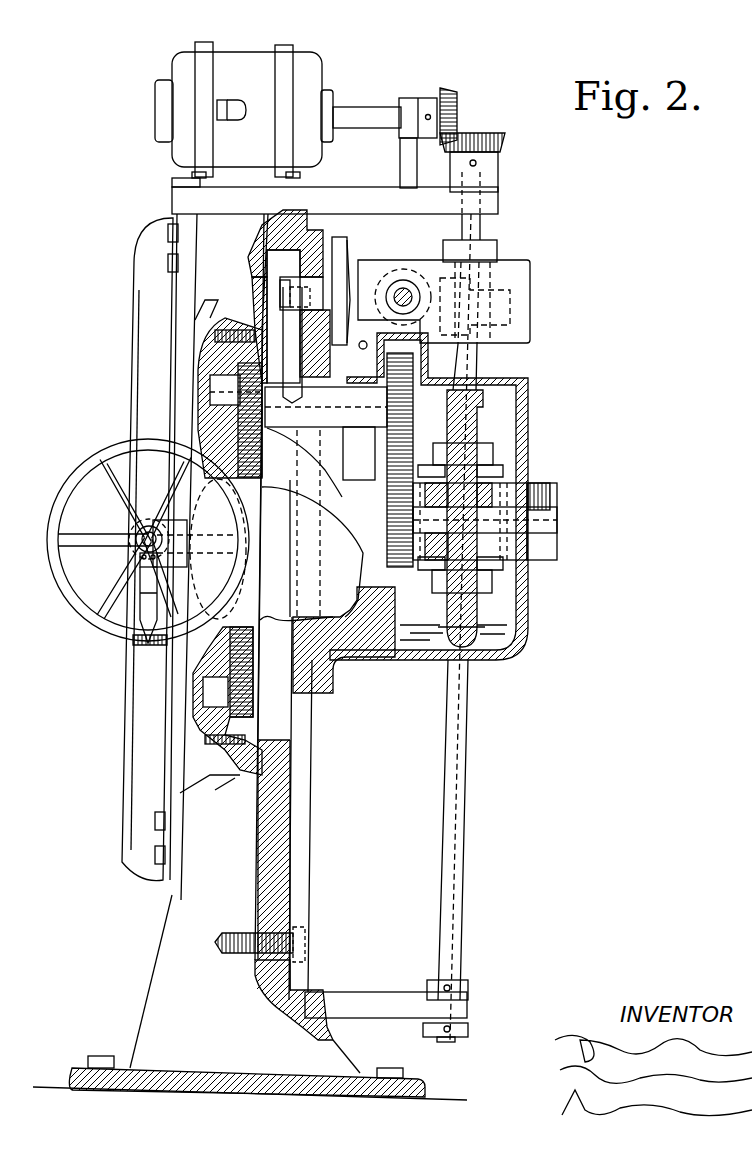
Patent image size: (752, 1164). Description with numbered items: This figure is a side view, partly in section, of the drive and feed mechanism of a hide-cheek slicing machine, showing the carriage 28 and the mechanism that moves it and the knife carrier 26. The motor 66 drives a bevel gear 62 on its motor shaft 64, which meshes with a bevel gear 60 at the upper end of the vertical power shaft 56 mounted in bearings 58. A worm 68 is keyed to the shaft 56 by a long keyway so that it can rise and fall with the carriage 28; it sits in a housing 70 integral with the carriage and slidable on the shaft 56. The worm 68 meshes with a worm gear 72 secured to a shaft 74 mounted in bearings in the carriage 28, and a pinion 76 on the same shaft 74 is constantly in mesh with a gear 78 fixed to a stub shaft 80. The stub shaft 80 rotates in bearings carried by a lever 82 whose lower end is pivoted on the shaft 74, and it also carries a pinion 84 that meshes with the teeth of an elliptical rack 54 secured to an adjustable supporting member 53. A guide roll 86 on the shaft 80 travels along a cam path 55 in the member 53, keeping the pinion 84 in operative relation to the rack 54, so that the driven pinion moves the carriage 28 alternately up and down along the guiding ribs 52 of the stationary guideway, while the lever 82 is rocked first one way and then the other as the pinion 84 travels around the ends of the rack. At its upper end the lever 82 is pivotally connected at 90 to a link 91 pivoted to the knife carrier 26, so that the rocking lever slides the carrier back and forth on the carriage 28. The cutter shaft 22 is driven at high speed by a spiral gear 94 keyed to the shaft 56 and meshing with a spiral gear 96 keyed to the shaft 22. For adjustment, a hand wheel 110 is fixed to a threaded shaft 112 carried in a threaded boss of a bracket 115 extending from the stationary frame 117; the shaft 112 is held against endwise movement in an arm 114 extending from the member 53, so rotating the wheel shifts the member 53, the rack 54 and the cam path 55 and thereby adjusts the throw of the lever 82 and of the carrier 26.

The shaft 22 is at (404, 286).
The knife carrier 26 is at (342, 255).
The carriage 28 is at (332, 672).
The guiding ribs 52 is at (302, 768).
The adjustable supporting member 53 is at (210, 778).
The elliptical rack 54 is at (215, 352).
The cam path 55 is at (215, 385).
The shaft 56 is at (480, 230).
The bearings 58 is at (490, 196).
The bevel gear 60 is at (502, 140).
The bevel gear 62 is at (452, 93).
The motor shaft 64 is at (352, 112).
The motor 66 is at (245, 78).
The worm 68 is at (505, 470).
The housing 70 is at (522, 586).
The worm gear 72 is at (490, 628).
The shaft 74 is at (558, 527).
The pinion 76 is at (398, 558).
The gear 78 is at (404, 440).
The stub shaft 80 is at (378, 406).
The lever 82 is at (290, 335).
The pinion 84 is at (248, 420).
The guide roll 86 is at (228, 396).
The pivotal connection 90 is at (256, 268).
The link 91 is at (322, 283).
The spiral gear 94 is at (512, 296).
The spiral gear 96 is at (418, 275).
The hand wheel 110 is at (100, 620).
The shaft 112 is at (142, 538).
The arm 114 is at (178, 528).
The bracket 115 is at (133, 282).
The stationary frame 117 is at (212, 204).